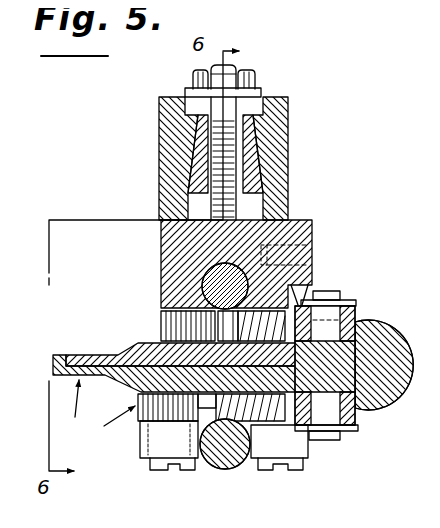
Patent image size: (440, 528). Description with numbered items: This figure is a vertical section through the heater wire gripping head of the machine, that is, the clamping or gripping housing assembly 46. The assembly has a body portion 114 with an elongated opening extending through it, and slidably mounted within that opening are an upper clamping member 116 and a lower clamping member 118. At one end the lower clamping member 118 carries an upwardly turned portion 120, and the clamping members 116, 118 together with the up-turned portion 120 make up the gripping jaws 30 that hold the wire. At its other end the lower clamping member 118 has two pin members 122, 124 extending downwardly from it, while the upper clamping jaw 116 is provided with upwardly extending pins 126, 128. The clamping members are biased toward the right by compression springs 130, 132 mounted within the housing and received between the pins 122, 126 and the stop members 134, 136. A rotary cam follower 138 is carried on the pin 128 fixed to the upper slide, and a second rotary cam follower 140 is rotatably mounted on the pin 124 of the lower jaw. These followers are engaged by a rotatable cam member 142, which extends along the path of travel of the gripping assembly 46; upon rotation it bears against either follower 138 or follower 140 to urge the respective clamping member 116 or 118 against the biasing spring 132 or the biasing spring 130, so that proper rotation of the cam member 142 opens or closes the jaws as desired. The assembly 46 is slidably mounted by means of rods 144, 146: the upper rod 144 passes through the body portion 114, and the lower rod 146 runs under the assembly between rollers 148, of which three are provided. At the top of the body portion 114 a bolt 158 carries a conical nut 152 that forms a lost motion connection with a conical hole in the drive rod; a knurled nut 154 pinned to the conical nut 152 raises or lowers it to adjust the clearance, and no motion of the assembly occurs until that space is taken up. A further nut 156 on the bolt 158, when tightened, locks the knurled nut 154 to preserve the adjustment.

The gripping jaws 30 is at (70, 428).
The clamping or gripping housing assembly 46 is at (95, 441).
The body portion 114 is at (158, 234).
The upper clamping member 116 is at (209, 339).
The lower clamping member 118 is at (80, 370).
The upwardly turned portion 120 is at (190, 359).
The pin member 122 is at (280, 413).
The pin member 124 is at (330, 426).
The pin 126 is at (291, 296).
The pin 128 is at (323, 300).
The compression spring 130 is at (278, 447).
The compression spring 132 is at (243, 337).
The stop member 134 is at (130, 407).
The stop member 136 is at (155, 303).
The rotary cam follower 138 is at (349, 313).
The rotary cam follower 140 is at (341, 420).
The rotatable cam member 142 is at (398, 386).
The rod 144 is at (195, 276).
The rod 146 is at (200, 457).
The rollers 148 is at (134, 456).
The conical nut 152 is at (250, 151).
The knurled nut 154 is at (157, 100).
The nut 156 is at (248, 69).
The bolt 158 is at (230, 58).